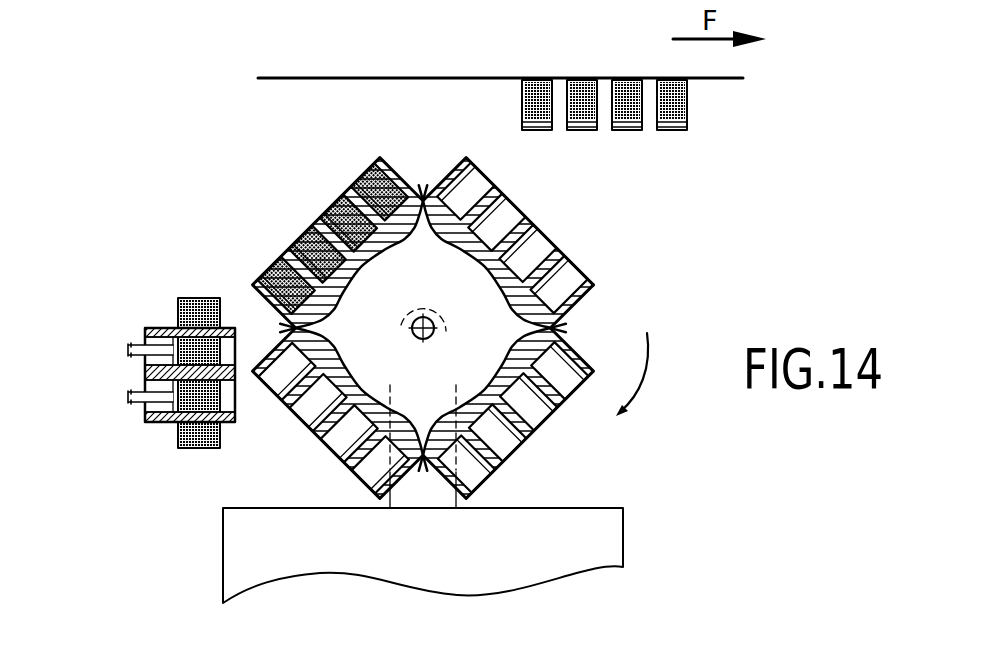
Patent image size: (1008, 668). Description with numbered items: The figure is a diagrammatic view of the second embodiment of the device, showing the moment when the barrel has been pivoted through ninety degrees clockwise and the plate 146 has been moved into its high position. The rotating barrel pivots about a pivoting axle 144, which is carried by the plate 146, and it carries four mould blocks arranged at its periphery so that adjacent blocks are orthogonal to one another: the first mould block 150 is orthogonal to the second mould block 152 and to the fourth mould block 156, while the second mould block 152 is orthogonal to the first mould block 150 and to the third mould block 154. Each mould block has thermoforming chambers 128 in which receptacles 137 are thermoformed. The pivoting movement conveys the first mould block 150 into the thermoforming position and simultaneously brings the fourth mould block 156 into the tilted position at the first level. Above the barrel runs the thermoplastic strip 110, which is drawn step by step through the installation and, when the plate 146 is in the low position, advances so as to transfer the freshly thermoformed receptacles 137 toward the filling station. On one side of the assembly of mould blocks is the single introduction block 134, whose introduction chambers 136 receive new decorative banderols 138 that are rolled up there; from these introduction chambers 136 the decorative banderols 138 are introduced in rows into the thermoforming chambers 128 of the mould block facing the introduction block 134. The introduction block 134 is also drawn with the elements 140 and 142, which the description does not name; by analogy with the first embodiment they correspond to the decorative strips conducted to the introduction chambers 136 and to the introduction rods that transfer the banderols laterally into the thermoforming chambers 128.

The thermoplastic strip 110 is at (294, 78).
The thermoforming chambers 128 is at (518, 314).
The introduction block 134 is at (144, 384).
The introduction chambers 136 is at (160, 343).
The receptacles 137 is at (524, 128).
The decorative banderols 138 is at (571, 74).
The plunger 140 is at (205, 306).
The supply lines 142 is at (130, 398).
The pivoting axle 144 is at (431, 318).
The plate 146 is at (443, 565).
The first mould block 150 is at (345, 280).
The second mould block 152 is at (553, 327).
The third mould block 154 is at (518, 354).
The fourth mould block 156 is at (428, 430).